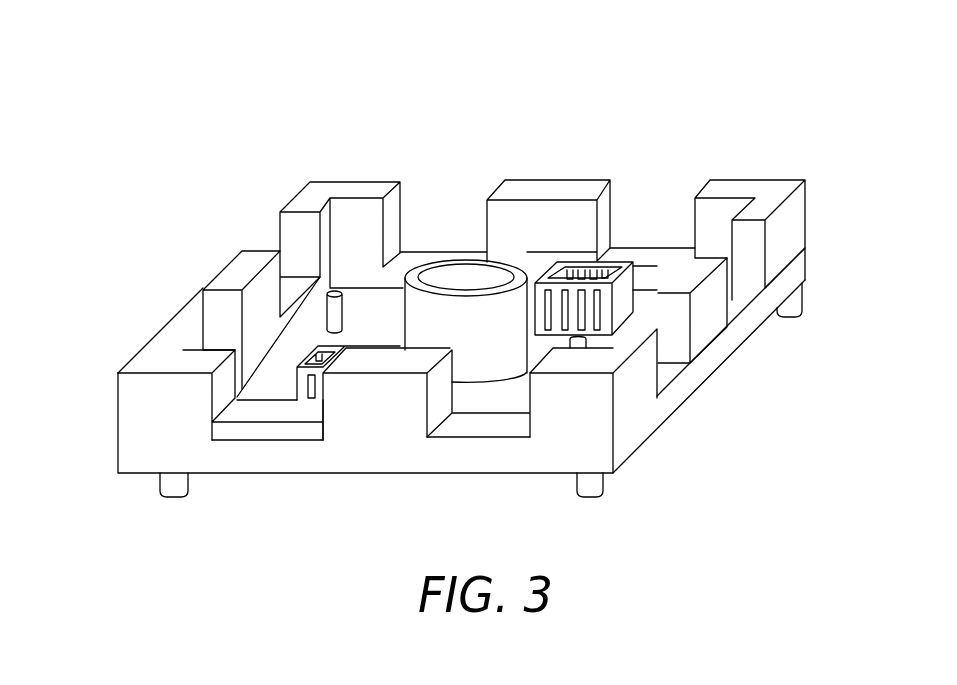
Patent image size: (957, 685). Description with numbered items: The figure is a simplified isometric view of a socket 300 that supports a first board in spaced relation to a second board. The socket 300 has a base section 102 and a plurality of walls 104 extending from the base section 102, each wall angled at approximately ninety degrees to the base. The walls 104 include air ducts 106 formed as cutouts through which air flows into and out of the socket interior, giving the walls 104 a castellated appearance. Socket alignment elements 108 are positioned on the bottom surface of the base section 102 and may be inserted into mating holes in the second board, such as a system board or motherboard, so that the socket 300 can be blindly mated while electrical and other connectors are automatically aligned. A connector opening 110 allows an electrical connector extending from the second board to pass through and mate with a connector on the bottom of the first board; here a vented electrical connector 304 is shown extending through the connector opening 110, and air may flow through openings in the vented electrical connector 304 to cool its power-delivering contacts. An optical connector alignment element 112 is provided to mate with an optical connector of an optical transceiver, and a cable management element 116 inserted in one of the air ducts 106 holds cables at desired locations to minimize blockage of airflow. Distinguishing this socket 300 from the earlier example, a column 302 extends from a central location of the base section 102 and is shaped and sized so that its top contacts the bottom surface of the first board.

The socket 300 is at (217, 68).
The column 302 is at (457, 276).
The vented electrical connector 304 is at (597, 258).
The base section 102 is at (363, 473).
The walls 104 is at (628, 400).
The air ducts 106 is at (496, 415).
The socket alignment elements 108 is at (173, 497).
The connector openings 110 is at (640, 333).
The optical connector alignment elements 112 is at (330, 292).
The cable management element 116 is at (212, 440).